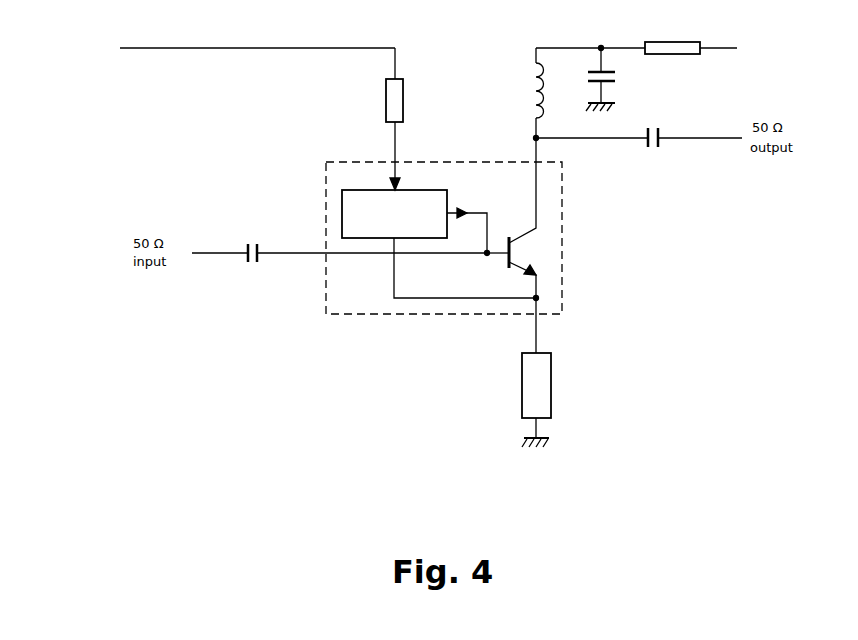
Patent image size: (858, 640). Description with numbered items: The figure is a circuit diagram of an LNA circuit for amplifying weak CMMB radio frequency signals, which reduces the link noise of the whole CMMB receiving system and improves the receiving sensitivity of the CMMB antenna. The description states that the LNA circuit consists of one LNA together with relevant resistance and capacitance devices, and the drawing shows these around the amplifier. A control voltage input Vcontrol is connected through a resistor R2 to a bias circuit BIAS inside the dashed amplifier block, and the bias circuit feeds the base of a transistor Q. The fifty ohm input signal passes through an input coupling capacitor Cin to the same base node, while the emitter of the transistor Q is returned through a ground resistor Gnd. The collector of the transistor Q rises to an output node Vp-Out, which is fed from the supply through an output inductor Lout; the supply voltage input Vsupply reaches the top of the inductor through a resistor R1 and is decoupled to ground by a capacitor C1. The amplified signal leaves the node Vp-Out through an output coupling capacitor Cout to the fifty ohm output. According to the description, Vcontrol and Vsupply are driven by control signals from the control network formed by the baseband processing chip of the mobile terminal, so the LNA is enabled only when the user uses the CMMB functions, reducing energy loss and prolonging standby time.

The supply resistor R1 is at (691, 38).
The control resistor R2 is at (408, 119).
The supply decoupling capacitor C1 is at (613, 79).
The output inductor Lout is at (511, 94).
The output coupling capacitor Cout is at (639, 148).
The input coupling capacitor Cin is at (339, 263).
The element Vcontrol is at (212, 45).
The element Vsupply is at (768, 49).
The output node voltage Vp-Out is at (550, 98).
The ground resistor Gnd is at (519, 384).
The bias circuit BIAS is at (440, 245).
The transistor Q is at (511, 245).